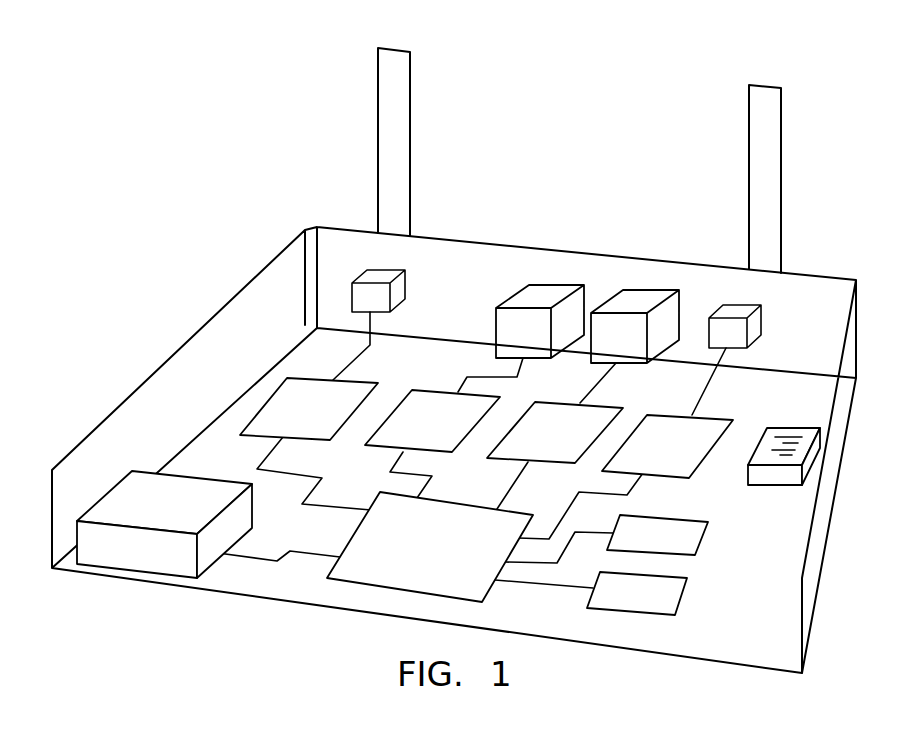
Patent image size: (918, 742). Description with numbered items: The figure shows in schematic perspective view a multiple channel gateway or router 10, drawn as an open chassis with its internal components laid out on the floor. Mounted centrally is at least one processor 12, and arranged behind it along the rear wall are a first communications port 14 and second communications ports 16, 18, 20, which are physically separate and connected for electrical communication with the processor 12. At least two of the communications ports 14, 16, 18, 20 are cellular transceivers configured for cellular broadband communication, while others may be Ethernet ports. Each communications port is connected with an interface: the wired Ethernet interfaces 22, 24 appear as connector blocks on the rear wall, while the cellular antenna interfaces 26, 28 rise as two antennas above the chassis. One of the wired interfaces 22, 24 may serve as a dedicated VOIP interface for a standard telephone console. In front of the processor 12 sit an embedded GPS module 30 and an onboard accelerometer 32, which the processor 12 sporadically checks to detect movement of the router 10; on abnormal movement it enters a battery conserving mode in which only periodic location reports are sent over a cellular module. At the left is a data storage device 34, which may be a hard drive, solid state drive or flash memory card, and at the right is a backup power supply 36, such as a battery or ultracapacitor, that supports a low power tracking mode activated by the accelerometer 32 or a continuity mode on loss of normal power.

The multiple channel gateway or router 10 is at (290, 182).
The processor 12 is at (449, 500).
The first communications port 14 is at (554, 401).
The second communications port 16 is at (430, 389).
The second communications port 18 is at (670, 414).
The second communications port 20 is at (312, 378).
The wired (Ethernet) interface 22 is at (652, 297).
The wired (Ethernet) interface 24 is at (529, 298).
The cellular (antenna) interface 26 is at (767, 169).
The cellular (antenna) interface 28 is at (400, 123).
The GPS module 30 is at (687, 518).
The accelerometer 32 is at (676, 577).
The data storage device 34 is at (203, 481).
The power supply (battery) 36 is at (802, 425).